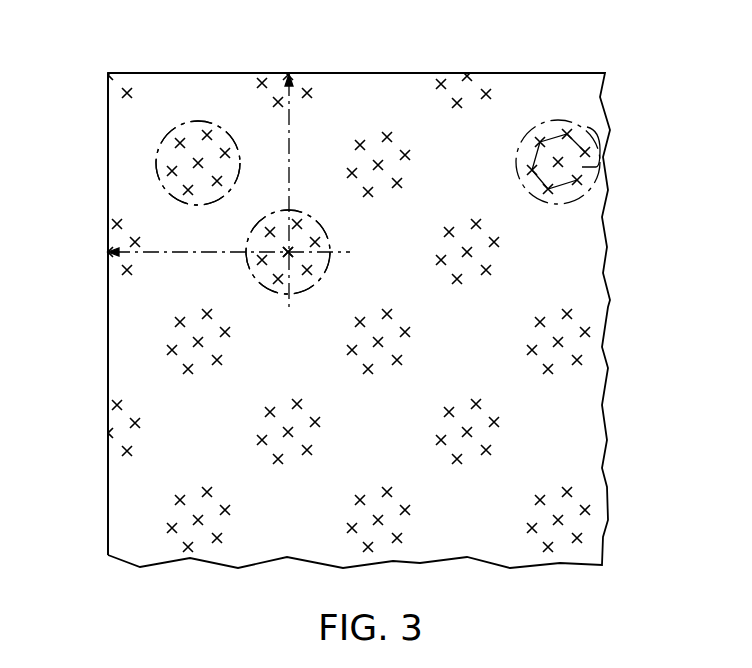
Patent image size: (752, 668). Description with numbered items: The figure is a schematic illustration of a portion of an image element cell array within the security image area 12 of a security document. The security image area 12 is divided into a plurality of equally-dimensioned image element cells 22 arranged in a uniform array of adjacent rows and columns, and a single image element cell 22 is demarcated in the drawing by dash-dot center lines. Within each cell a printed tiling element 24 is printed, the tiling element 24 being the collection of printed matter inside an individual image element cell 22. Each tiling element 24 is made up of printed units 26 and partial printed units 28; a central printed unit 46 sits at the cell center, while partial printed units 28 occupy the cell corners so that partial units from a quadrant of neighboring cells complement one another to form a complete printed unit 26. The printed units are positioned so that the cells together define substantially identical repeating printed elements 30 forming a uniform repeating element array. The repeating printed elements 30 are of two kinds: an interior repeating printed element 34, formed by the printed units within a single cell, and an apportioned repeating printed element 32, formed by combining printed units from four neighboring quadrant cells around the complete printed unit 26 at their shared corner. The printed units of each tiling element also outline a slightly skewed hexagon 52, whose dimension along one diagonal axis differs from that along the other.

The security image area 12 is at (528, 74).
The image element cell 22 is at (290, 130).
The printed tiling element 24 is at (115, 123).
The printed unit 26 is at (118, 228).
The partial printed unit 28 is at (288, 252).
The repeating printed element 30 is at (613, 128).
The apportioned repeating printed element 32 is at (327, 233).
The interior repeating printed element 34 is at (200, 121).
The central printed unit 46 is at (198, 343).
The skewed hexagon 52 is at (613, 157).